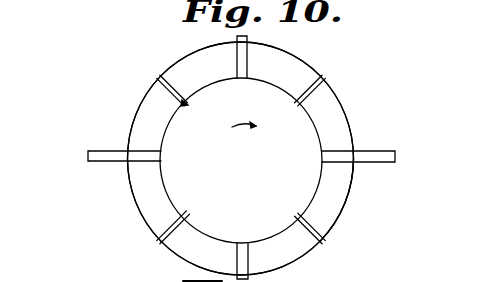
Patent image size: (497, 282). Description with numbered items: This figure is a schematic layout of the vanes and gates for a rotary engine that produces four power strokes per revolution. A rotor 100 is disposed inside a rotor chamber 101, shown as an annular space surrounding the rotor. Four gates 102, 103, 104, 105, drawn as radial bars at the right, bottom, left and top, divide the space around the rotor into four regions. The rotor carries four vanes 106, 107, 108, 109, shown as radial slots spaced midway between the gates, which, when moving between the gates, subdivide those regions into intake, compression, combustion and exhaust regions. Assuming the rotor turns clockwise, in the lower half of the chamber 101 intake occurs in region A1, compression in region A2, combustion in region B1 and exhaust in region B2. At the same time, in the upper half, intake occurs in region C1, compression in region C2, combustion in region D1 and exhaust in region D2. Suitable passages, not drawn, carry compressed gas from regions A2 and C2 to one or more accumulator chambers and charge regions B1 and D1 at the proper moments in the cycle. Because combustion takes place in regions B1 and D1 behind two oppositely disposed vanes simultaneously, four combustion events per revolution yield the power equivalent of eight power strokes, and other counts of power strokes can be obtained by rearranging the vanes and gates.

The rotor 100 is at (300, 122).
The rotor chamber 101 is at (355, 136).
The gate 102 is at (366, 158).
The gate 103 is at (240, 241).
The gate 104 is at (104, 158).
The gate 105 is at (245, 79).
The vane 106 is at (316, 81).
The vane 107 is at (323, 237).
The vane 108 is at (195, 200).
The vane 109 is at (183, 106).
The intake region A1 is at (342, 206).
The compression region A2 is at (306, 251).
The combustion region B1 is at (184, 265).
The exhaust region B2 is at (142, 198).
The intake region C1 is at (142, 115).
The compression region C2 is at (199, 62).
The combustion region D1 is at (282, 63).
The exhaust region D2 is at (331, 113).